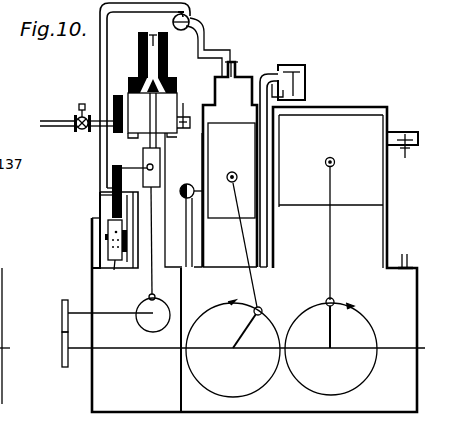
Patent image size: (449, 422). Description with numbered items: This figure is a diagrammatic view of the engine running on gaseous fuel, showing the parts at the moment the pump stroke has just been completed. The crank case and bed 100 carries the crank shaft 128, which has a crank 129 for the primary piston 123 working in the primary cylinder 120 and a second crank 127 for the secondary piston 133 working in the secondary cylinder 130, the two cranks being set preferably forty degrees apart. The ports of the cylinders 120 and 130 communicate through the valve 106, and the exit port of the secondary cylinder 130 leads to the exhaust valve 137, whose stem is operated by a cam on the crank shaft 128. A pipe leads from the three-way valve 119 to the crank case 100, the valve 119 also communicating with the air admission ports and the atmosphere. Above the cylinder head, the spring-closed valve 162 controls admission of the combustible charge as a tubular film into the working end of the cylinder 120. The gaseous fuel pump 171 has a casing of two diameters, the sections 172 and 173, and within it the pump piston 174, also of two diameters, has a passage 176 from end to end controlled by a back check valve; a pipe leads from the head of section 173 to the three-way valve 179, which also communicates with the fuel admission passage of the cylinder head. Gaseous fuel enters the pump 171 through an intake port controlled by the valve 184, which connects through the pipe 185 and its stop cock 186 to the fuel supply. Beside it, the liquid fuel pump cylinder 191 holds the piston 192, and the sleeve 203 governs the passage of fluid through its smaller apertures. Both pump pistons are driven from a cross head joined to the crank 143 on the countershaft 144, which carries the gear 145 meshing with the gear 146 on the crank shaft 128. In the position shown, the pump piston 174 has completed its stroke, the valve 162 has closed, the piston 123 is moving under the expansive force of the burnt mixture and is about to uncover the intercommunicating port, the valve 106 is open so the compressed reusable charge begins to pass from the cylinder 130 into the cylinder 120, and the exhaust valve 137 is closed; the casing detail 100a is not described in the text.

The crank case and bed 100 is at (417, 306).
The casing pin 100a is at (403, 250).
The valve 106 is at (308, 82).
The three-way valve 119 is at (183, 200).
The primary cylinder 120 is at (240, 164).
The primary piston 123 is at (232, 215).
The second crank 127 is at (337, 333).
The crank shaft 128 is at (132, 350).
The crank 129 is at (240, 331).
The secondary cylinder 130 is at (297, 229).
The secondary piston 133 is at (331, 207).
The exhaust valve 137 is at (404, 137).
The crank 143 is at (160, 305).
The countershaft 144 is at (110, 326).
The gear 145 is at (62, 301).
The gear 146 is at (62, 361).
The valve 162 is at (235, 74).
The gaseous fuel pump 171 is at (145, 99).
The casing section 172 is at (177, 90).
The casing section 173 is at (141, 62).
The pump piston 174 is at (138, 68).
The passage 176 is at (156, 61).
The three-way valve 179 is at (189, 19).
The valve 184 is at (113, 101).
The pipe 185 is at (82, 131).
The stop cock 186 is at (72, 118).
The liquid fuel pump cylinder 191 is at (119, 269).
The piston 192 is at (112, 205).
The sleeve 203 is at (106, 238).